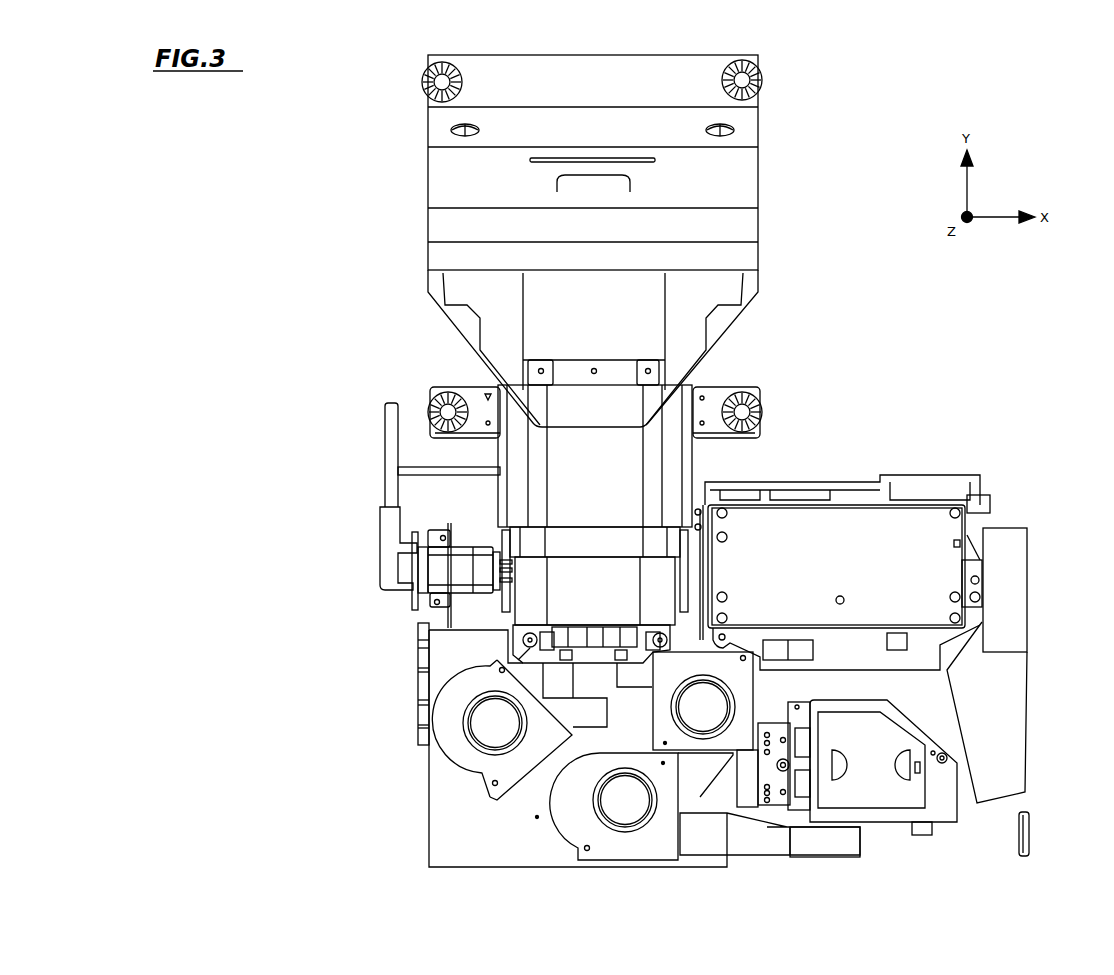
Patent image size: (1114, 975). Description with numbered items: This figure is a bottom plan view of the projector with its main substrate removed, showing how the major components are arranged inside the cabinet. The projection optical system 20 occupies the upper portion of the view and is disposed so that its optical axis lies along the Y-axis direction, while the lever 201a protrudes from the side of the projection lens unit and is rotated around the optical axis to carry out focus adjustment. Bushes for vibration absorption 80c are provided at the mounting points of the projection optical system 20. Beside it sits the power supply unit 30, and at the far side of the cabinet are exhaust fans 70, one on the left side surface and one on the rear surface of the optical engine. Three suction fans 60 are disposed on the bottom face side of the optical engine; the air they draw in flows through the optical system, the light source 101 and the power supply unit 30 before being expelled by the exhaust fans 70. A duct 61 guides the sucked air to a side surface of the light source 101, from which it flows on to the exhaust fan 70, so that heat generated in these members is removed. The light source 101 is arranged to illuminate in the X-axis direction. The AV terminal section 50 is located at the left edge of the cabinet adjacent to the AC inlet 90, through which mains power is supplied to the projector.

The projection optical system 20 is at (677, 293).
The power supply unit 30 is at (780, 527).
The AV terminal section 50 is at (410, 682).
The suction fan 60 is at (497, 760).
The duct 61 is at (823, 837).
The exhaust fan 70 is at (943, 480).
The bush for vibration absorption 80c is at (422, 80).
The AC inlet 90 is at (440, 570).
The light source 101 is at (873, 807).
The lever 201a is at (417, 462).